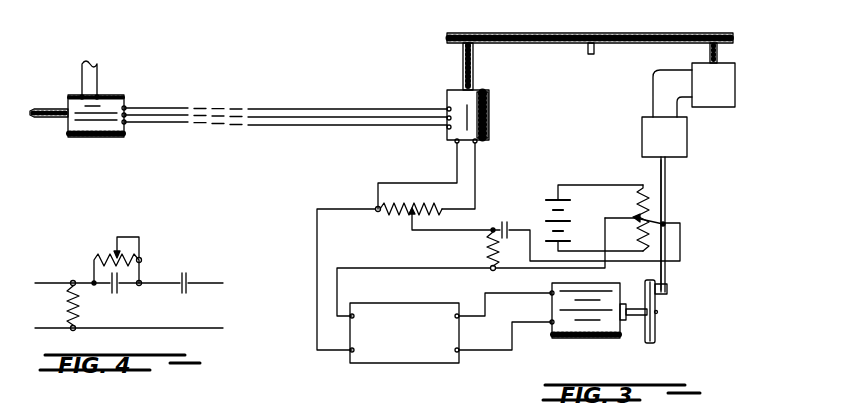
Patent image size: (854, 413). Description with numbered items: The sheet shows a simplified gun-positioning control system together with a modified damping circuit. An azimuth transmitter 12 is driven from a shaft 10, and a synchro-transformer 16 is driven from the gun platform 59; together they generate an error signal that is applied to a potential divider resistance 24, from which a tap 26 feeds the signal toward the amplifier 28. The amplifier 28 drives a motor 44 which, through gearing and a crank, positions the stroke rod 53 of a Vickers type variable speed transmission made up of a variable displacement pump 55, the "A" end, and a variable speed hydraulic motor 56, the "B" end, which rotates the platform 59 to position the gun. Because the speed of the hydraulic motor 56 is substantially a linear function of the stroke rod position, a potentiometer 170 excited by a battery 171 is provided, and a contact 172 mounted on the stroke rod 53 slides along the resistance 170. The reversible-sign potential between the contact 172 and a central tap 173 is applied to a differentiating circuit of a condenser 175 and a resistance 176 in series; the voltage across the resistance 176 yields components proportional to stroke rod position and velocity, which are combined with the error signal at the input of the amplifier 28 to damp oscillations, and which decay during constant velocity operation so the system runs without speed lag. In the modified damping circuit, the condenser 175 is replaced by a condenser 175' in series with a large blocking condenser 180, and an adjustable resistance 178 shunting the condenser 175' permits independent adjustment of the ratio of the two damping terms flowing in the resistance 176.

In FIG. 3, the shaft 10 is at (60, 119).
In FIG. 3, the azimuth transmitter 12 is at (113, 138).
In FIG. 3, the synchro-transformer 16 is at (489, 141).
In FIG. 3, the platform 59 is at (633, 33).
In FIG. 3, the variable speed hydraulic motor 56 is at (735, 88).
In FIG. 3, the variable displacement pump 55 is at (687, 147).
In FIG. 3, the stroke rod 53 is at (665, 190).
In FIG. 3, the contact 172 is at (665, 212).
In FIG. 3, the battery 171 is at (558, 200).
In FIG. 3, the potentiometer 170 is at (640, 229).
In FIG. 3, the central tap 173 is at (640, 215).
In FIG. 3, the potential divider resistance 24 is at (378, 212).
In FIG. 3, the tap 26 is at (414, 217).
In FIG. 3, the condenser 175 is at (585, 229).
In FIG. 3, the resistance 176 is at (491, 250).
In FIG. 4, the resistance 176 is at (72, 300).
In FIG. 3, the amplifier 28 is at (393, 364).
In FIG. 3, the motor 44 is at (590, 339).
In FIG. 4, the adjustable resistance 178 is at (113, 250).
In FIG. 4, the condenser 175' is at (136, 294).
In FIG. 4, the condenser 180 is at (190, 276).